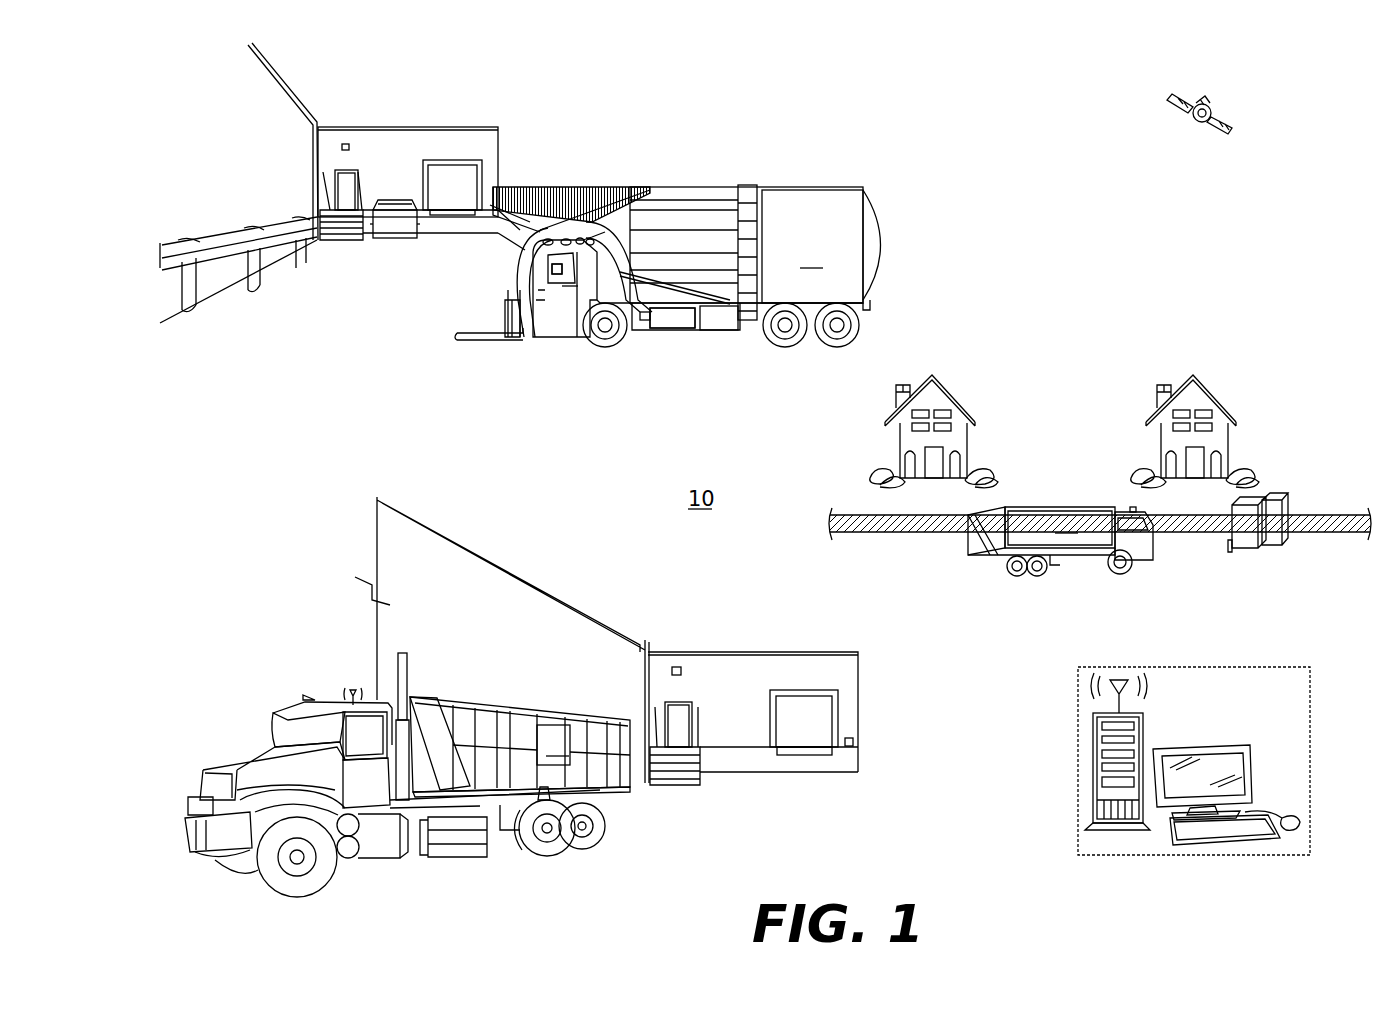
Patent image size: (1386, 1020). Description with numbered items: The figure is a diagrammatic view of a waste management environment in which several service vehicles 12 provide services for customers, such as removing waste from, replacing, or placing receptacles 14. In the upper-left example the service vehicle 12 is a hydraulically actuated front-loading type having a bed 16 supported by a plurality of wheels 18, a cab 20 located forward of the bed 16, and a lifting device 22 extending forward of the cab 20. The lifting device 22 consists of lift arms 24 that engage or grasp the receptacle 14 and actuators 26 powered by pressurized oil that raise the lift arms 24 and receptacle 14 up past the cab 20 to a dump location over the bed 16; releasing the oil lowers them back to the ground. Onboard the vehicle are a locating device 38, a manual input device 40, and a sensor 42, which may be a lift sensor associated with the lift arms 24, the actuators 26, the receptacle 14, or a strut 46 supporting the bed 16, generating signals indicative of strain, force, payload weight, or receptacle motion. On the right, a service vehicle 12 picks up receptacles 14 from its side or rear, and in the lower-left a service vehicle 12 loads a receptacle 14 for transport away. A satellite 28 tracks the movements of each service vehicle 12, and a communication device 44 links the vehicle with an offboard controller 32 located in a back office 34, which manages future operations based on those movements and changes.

The service vehicle 12 is at (682, 532).
The receptacle 14 is at (395, 240).
The bed 16 is at (485, 790).
The wheels 18 is at (610, 345).
The cab 20 is at (569, 284).
The lifting device 22 is at (551, 350).
The lift arm 24 is at (525, 262).
The actuator 26 is at (506, 305).
The satellite 28 is at (1190, 118).
The offboard controller 32 is at (1145, 735).
The back office 34 is at (1169, 763).
The locating device 38 is at (566, 239).
The manual input device 40 is at (540, 283).
The sensor 42 is at (672, 310).
The communication device 44 is at (588, 222).
The strut 46 is at (547, 239).